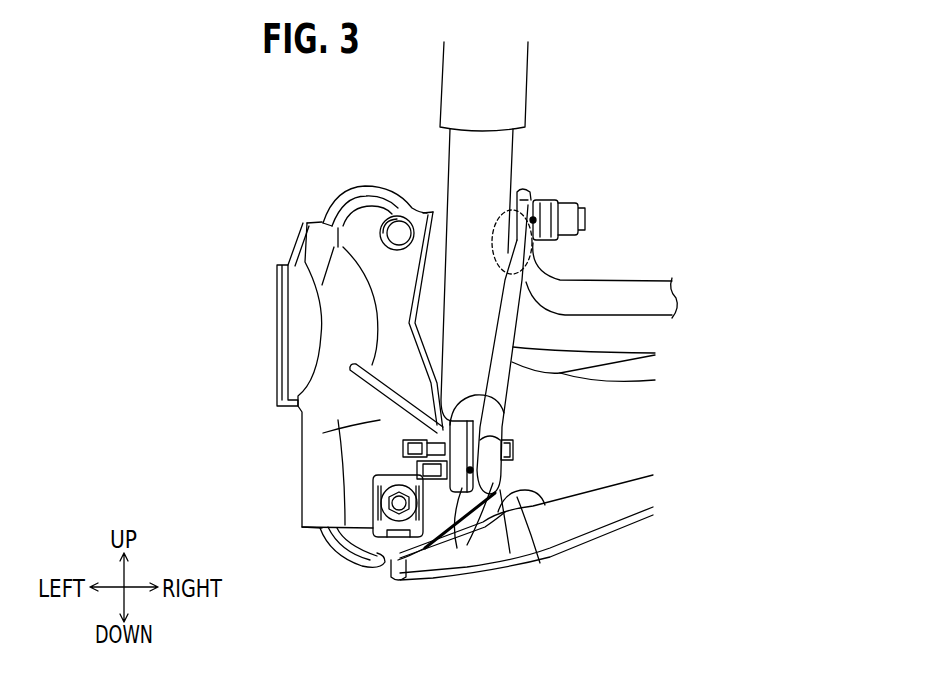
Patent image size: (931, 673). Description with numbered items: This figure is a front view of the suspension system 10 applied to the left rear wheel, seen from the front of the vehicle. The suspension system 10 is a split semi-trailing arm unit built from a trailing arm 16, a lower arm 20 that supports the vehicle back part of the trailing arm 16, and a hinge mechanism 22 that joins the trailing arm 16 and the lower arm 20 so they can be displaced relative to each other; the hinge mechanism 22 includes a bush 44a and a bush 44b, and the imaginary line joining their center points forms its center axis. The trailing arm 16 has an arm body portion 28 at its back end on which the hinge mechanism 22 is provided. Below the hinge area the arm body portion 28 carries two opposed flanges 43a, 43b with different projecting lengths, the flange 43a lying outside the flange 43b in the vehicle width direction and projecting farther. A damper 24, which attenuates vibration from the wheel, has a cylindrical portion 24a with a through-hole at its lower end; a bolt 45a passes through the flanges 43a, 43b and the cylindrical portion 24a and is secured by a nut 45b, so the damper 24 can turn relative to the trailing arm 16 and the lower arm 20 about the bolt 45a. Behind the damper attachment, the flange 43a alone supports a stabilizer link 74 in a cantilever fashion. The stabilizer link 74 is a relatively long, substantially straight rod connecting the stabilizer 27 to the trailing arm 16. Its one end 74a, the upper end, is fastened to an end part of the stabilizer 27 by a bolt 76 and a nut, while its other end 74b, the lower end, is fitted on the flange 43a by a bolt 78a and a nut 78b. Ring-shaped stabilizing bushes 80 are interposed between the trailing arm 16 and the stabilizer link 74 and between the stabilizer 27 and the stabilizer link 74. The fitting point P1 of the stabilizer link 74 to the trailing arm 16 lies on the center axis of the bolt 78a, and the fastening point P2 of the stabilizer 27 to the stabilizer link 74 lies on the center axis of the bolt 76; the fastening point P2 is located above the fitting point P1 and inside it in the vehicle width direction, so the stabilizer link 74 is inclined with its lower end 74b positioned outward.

The suspension system 10 is at (651, 180).
The trailing arm 16 is at (269, 381).
The lower arm 20 is at (606, 547).
The hinge mechanism 22 is at (353, 148).
The damper 24 is at (540, 92).
The cylindrical portion 24a is at (505, 405).
The stabilizer 27 is at (613, 280).
The arm body portion 28 is at (323, 433).
The flange 43a is at (462, 550).
The flange 43b is at (522, 540).
The bush 44a is at (327, 191).
The bush 44b is at (370, 565).
The bolt 45a is at (513, 450).
The nut 45b is at (417, 470).
The stabilizer link 74 is at (530, 329).
The one end (upper end) of stabilizer link 74a is at (524, 192).
The other end (lower end) of stabilizer link 74b is at (514, 500).
The bolt 76 is at (585, 219).
The bolt 78a is at (373, 510).
The nut 78b is at (418, 562).
The stabilizing bush 80 is at (541, 198).
The fitting point P1 is at (473, 470).
The fastening point P2 is at (536, 220).